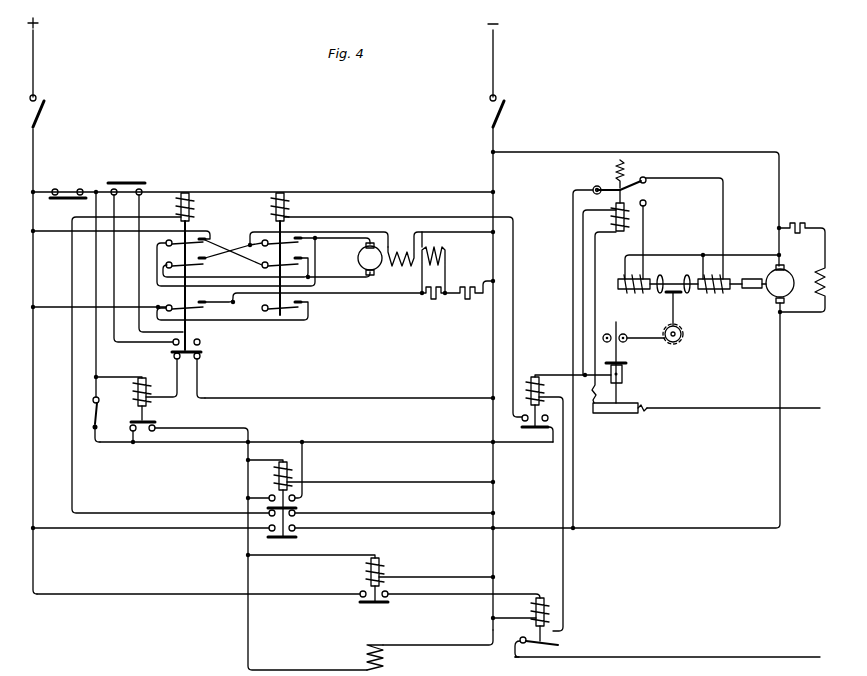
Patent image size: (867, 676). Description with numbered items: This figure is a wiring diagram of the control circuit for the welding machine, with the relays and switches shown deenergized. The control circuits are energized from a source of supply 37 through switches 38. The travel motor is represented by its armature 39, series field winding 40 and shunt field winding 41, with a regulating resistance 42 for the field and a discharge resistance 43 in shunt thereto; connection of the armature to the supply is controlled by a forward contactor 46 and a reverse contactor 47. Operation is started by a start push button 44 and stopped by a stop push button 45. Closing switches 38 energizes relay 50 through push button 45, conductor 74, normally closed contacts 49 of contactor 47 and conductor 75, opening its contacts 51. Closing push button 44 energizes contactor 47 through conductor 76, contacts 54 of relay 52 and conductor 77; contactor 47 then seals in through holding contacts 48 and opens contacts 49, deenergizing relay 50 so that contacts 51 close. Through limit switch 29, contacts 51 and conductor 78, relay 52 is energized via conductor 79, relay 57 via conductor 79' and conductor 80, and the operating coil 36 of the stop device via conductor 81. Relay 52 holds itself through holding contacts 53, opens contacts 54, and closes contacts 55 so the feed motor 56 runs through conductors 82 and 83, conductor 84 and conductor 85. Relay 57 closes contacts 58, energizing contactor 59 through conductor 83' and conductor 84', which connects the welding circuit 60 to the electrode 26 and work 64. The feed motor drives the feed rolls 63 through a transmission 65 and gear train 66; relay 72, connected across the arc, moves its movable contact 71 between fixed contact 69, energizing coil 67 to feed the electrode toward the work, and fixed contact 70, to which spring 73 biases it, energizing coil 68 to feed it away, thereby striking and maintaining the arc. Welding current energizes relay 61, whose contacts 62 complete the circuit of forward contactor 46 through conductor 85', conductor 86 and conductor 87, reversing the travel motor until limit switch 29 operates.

The source of supply 37 is at (33, 55).
The switches 38 is at (45, 114).
The stop push button 45 is at (68, 188).
The start push button 44 is at (126, 181).
The reverse contactor 47 is at (185, 192).
The forward contactor 46 is at (280, 192).
The conductor 87 is at (398, 191).
The armature 39 is at (358, 258).
The series field winding 40 is at (396, 247).
The shunt field winding 41 is at (433, 256).
The discharge resistance 43 is at (431, 299).
The regulating resistance 42 is at (472, 299).
The conductor 86 is at (516, 283).
The conductor 85 is at (636, 192).
The spring 73 is at (610, 174).
The movable contact 71 is at (623, 186).
The fixed contact 70 is at (648, 184).
The fixed contact 69 is at (648, 206).
The relay 72 is at (619, 234).
The operating coil 67 is at (620, 291).
The transmission 65 is at (686, 294).
The operating coil 68 is at (726, 291).
The feed motor 56 is at (770, 298).
The feed rolls 63 is at (627, 326).
The gear train 66 is at (684, 341).
The electrode 26 is at (624, 380).
The relay 61 is at (534, 376).
The contacts 62 is at (540, 410).
The work 64 is at (628, 415).
The welding circuit 60 is at (805, 409).
The conductor 84 is at (537, 435).
The contactor 59 is at (540, 597).
The conductor 84' is at (515, 629).
The conductor 83' is at (464, 609).
The conductor 81 is at (426, 644).
The conductor 80 is at (447, 576).
The contacts 58 is at (388, 594).
The relay 57 is at (375, 557).
The conductor 79' is at (311, 569).
The operating coil 36 is at (365, 653).
The conductor 78 is at (251, 431).
The conductor 82 is at (34, 428).
The conductor 83 is at (151, 543).
The conductor 76 is at (74, 480).
The limit switch 29 is at (101, 414).
The contacts 51 is at (150, 432).
The relay 50 is at (142, 377).
The conductor 74 is at (95, 350).
The normally closed contacts 49 is at (200, 357).
The holding contacts 48 is at (200, 341).
The conductor 75 is at (322, 397).
The conductor 85' is at (326, 428).
The relay 52 is at (283, 461).
The holding contacts 53 is at (296, 498).
The contacts 54 is at (296, 514).
The contacts 55 is at (268, 529).
The conductor 79 is at (390, 467).
The conductor 77 is at (411, 512).